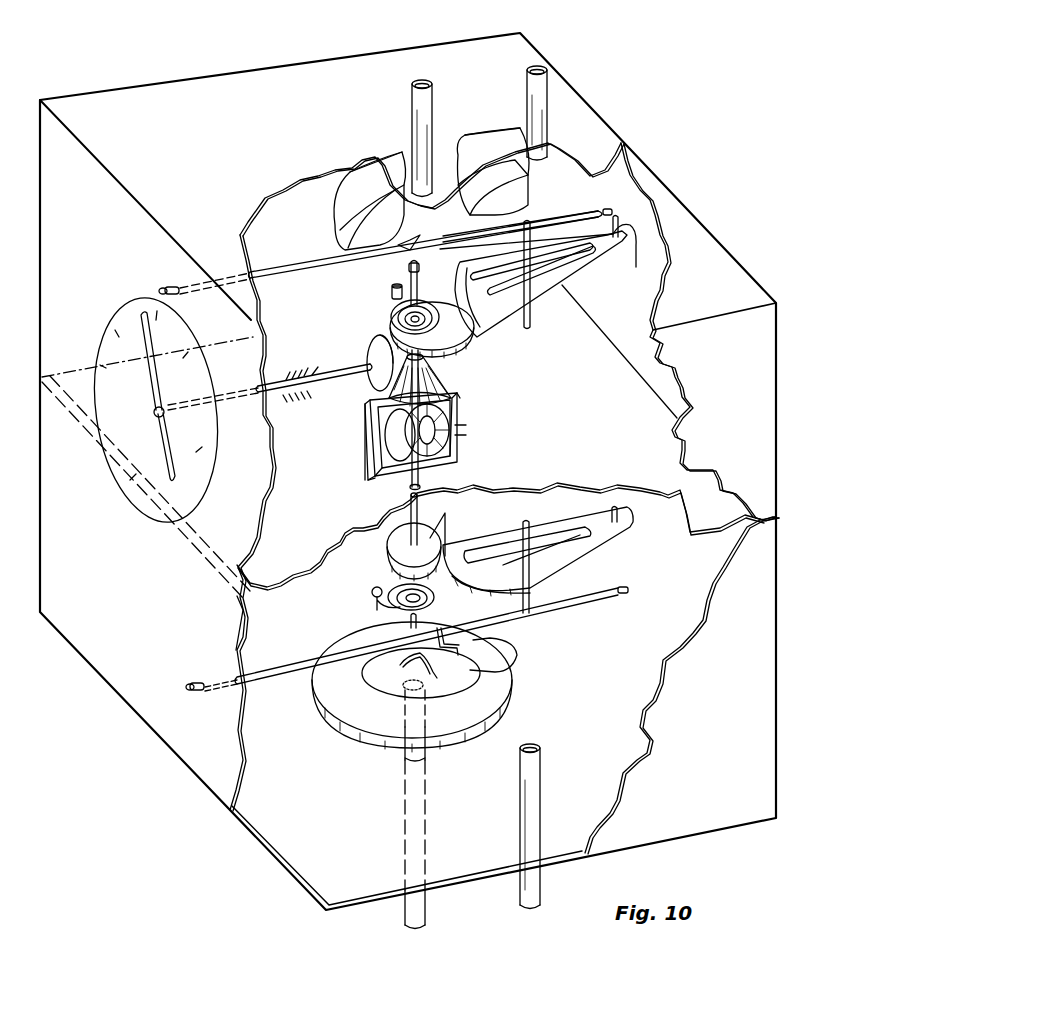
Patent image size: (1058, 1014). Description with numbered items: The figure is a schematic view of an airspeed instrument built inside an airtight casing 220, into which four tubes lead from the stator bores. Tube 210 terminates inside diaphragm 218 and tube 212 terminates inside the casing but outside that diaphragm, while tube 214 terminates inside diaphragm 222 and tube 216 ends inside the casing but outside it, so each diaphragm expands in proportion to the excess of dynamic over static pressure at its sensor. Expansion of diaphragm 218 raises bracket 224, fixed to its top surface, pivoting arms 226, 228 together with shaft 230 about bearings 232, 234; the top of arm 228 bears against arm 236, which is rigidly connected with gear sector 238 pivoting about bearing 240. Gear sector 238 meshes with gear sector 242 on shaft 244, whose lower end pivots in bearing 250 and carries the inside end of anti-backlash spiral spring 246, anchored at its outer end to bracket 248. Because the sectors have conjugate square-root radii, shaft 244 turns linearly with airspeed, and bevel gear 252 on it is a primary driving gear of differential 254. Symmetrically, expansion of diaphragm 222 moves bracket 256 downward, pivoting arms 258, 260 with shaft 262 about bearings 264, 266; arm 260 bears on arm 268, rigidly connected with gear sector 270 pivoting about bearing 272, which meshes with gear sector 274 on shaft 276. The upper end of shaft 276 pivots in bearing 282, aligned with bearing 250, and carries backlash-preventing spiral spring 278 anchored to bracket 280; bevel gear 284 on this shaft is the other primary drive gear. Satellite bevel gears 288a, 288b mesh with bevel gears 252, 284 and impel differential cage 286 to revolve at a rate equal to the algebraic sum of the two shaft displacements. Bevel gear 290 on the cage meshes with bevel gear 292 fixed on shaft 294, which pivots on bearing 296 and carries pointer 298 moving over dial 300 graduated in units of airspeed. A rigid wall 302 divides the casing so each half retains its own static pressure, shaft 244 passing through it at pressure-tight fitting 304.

The tube 210 is at (413, 926).
The tube 212 is at (530, 908).
The tube 214 is at (421, 80).
The tube 216 is at (540, 66).
The diaphragm 218 is at (345, 715).
The casing 220 is at (133, 674).
The diaphragm 222 is at (330, 218).
The bracket 224 is at (508, 676).
The arm 226 is at (480, 641).
The arm 228 is at (531, 606).
The shaft 230 is at (310, 660).
The bearing 232 is at (194, 690).
The bearing 234 is at (630, 592).
The arm 236 is at (505, 560).
The gear sector 238 is at (480, 572).
The bearing 240 is at (615, 540).
The gear sector 242 is at (385, 572).
The shaft 244 is at (405, 530).
The anti-backlash spiral spring 246 is at (408, 618).
The bracket 248 is at (372, 595).
The bearing 250 is at (266, 623).
The bevel gear 252 is at (455, 456).
The differential 254 is at (368, 445).
The bracket 256 is at (395, 240).
The arm 258 is at (380, 270).
The arm 260 is at (531, 240).
The shaft 262 is at (553, 213).
The bearing 264 is at (165, 289).
The bearing 266 is at (617, 207).
The arm 268 is at (575, 290).
The gear sector 270 is at (515, 312).
The bearing 272 is at (632, 270).
The gear sector 274 is at (460, 352).
The shaft 276 is at (505, 357).
The backlash-preventing spiral spring 278 is at (392, 325).
The bracket 280 is at (390, 300).
The bearing 282 is at (408, 282).
The bevel gear 284 is at (470, 410).
The differential cage 286 is at (372, 485).
The satellite bevel gear 288a is at (378, 468).
The satellite bevel gear 288b is at (455, 410).
The bevel gear 290 is at (452, 386).
The bevel gear 292 is at (362, 395).
The shaft 294 is at (368, 366).
The bearing 296 is at (300, 356).
The pointer 298 is at (152, 398).
The dial 300 is at (106, 355).
The rigid wall 302 is at (500, 519).
The pressure-tight fitting 304 is at (420, 483).